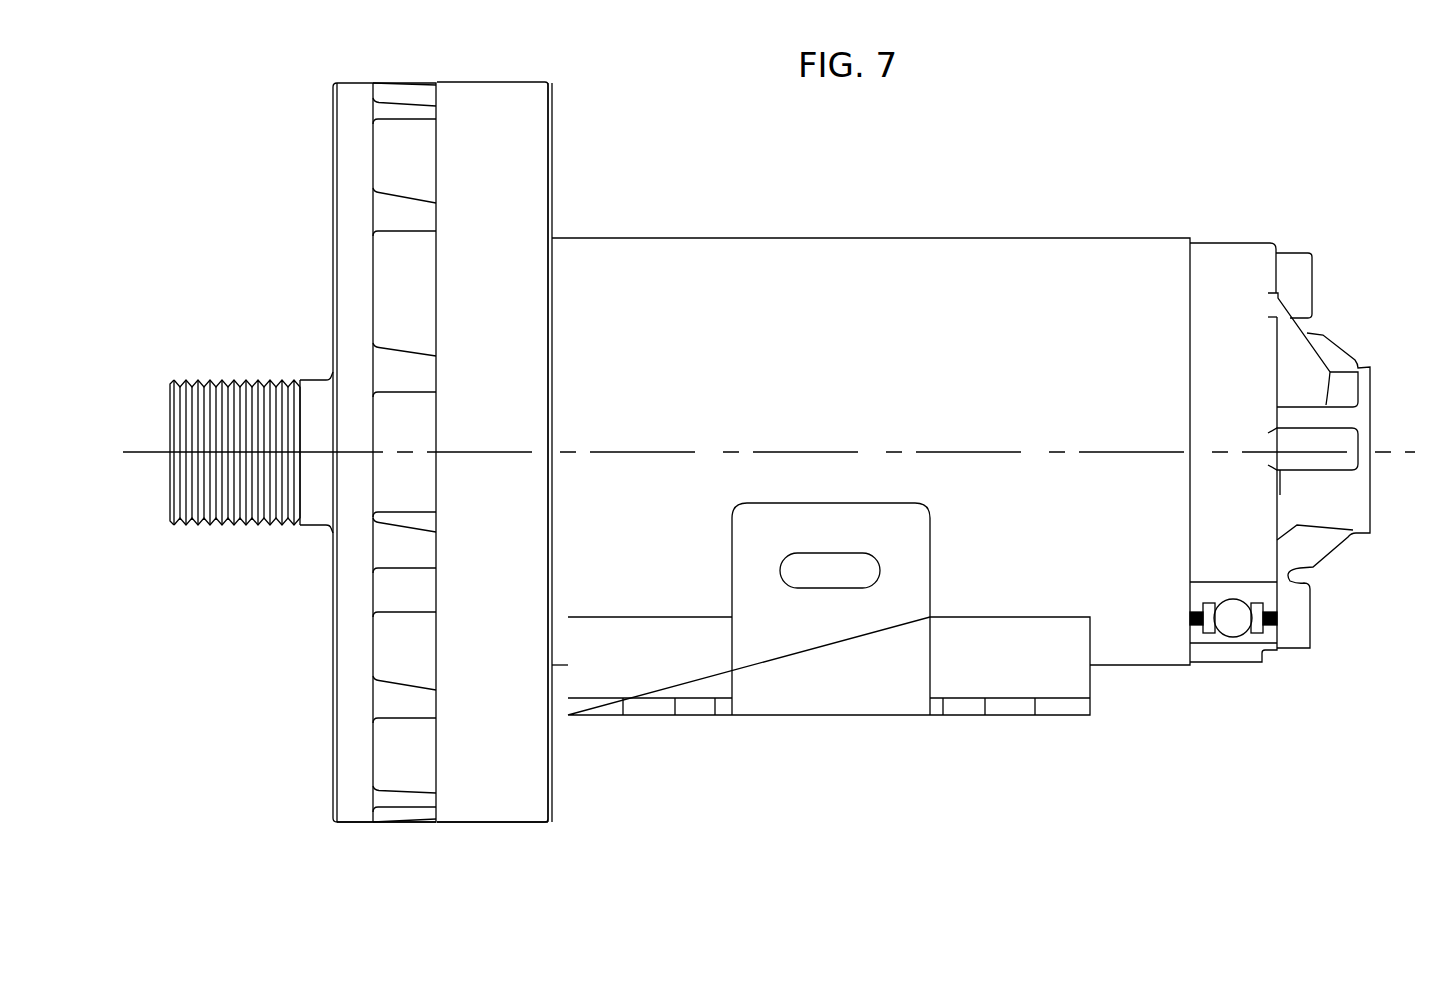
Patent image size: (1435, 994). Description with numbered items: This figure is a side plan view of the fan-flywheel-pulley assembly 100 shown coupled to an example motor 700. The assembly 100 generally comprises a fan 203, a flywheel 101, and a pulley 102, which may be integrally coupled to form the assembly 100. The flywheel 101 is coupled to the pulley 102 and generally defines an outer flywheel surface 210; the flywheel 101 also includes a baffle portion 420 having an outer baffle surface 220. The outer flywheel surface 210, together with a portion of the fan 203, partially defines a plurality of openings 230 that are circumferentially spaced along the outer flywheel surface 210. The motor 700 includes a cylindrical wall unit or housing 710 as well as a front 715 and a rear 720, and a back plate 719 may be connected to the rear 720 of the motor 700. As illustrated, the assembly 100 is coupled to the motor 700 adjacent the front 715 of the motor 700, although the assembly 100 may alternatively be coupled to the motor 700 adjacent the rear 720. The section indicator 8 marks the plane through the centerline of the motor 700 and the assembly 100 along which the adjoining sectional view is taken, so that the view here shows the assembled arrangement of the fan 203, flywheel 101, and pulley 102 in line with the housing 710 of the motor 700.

The section line 8- 8 is at (130, 455).
The fan-flywheel-pulley assembly 100 is at (302, 179).
The flywheel 101 is at (417, 73).
The pulley 102 is at (253, 372).
The fan 203 is at (385, 833).
The outer flywheel surface 210 is at (360, 92).
The outer baffle surface 220 is at (513, 93).
The openings 230 is at (388, 638).
The baffle portion 420 is at (482, 833).
The motor 700 is at (980, 217).
The housing 710 is at (789, 271).
The front 715 is at (185, 357).
The back plate 719 is at (1232, 268).
The rear 720 is at (1338, 318).